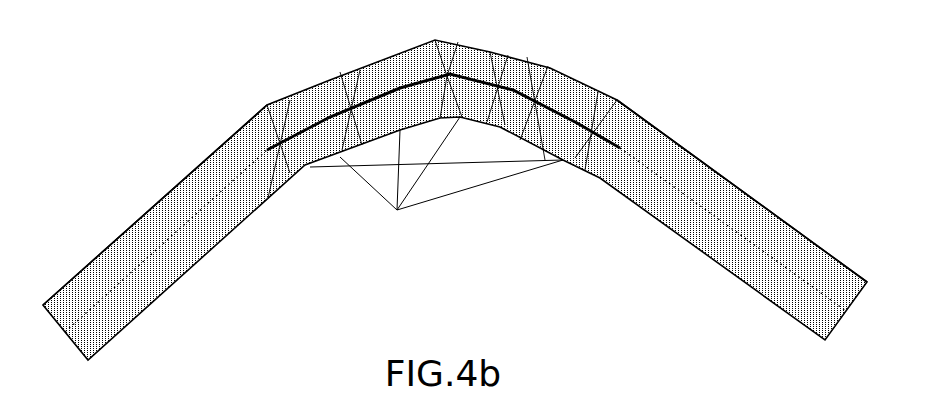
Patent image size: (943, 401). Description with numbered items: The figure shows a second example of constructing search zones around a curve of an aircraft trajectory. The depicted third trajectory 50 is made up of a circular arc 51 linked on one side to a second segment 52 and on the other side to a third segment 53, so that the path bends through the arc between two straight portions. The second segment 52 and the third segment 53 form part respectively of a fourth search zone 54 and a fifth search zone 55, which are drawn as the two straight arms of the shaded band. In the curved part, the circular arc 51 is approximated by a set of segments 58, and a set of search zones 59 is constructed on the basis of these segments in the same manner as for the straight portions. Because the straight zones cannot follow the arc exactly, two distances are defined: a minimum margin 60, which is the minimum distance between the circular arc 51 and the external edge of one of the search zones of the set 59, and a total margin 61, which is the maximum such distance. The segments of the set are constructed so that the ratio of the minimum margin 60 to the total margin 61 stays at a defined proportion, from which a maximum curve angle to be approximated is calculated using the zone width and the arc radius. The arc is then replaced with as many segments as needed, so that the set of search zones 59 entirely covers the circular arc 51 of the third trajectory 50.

The third trajectory 50 is at (62, 336).
The circular arc 51 is at (418, 55).
The second segment 52 is at (190, 224).
The third segment 53 is at (740, 237).
The fourth search zone 54 is at (143, 212).
The fifth search zone 55 is at (753, 198).
The set of segments 58 is at (438, 164).
The set of search zones 59 is at (451, 176).
The minimum margin 60 is at (490, 52).
The total margin 61 is at (598, 92).